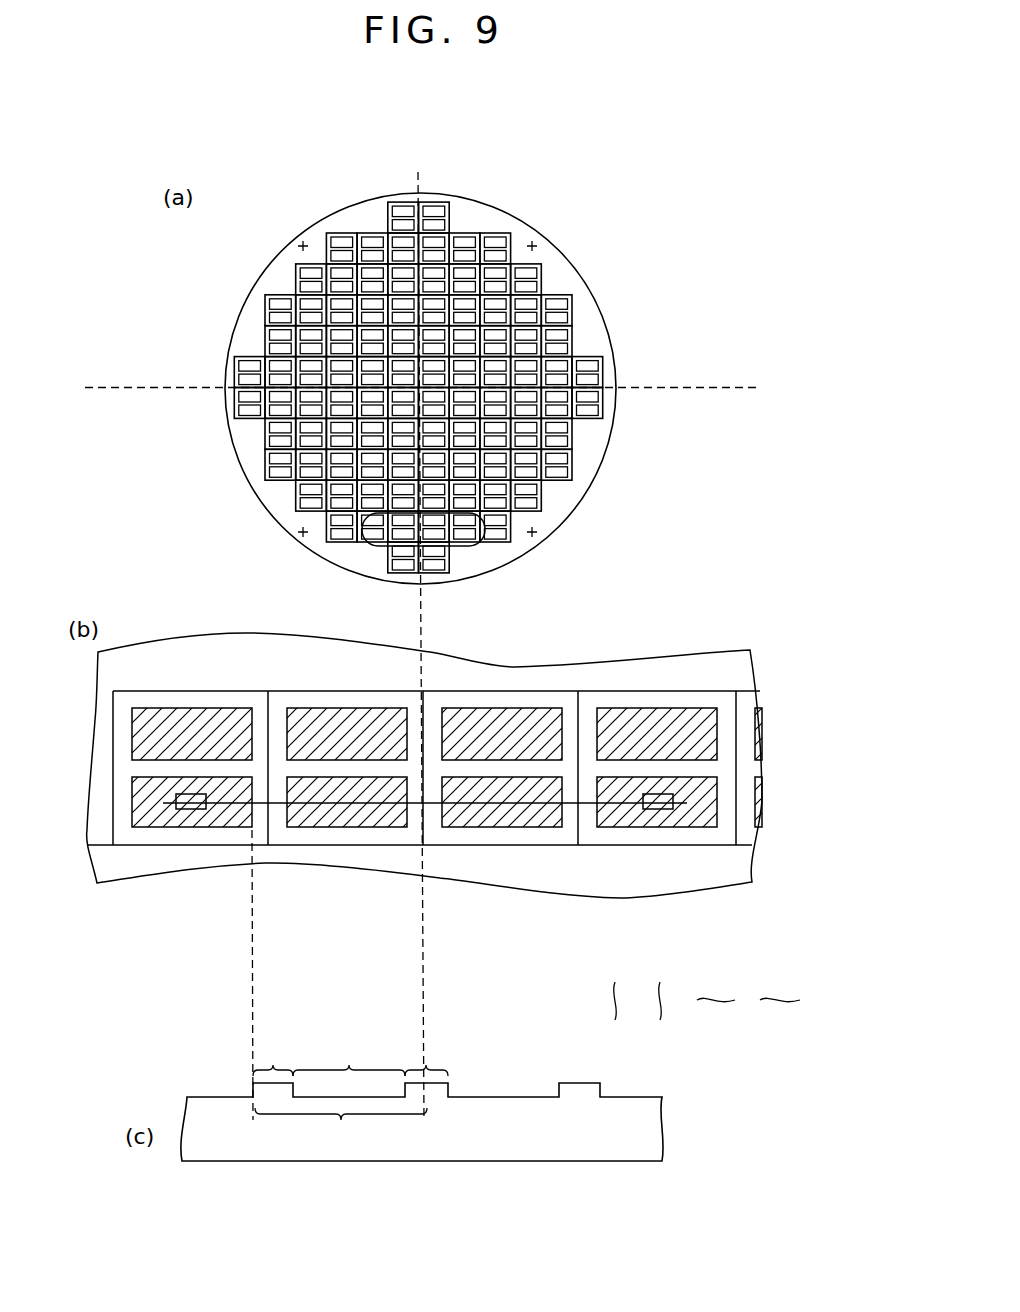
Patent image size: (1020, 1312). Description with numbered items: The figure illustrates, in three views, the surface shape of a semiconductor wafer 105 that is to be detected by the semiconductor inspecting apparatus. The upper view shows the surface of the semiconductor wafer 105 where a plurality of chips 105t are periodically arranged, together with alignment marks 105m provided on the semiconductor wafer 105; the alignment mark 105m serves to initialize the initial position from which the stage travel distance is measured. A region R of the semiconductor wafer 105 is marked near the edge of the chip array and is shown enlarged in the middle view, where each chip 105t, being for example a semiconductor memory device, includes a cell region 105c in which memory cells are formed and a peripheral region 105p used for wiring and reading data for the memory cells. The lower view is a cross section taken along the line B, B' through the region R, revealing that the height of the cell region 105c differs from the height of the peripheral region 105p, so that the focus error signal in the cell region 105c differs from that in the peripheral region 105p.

The semiconductor wafer 105 is at (608, 437).
The chip 105t is at (560, 292).
The cell region 105c is at (363, 743).
The peripheral region 105p is at (293, 835).
The alignment mark 105m is at (303, 247).
The region R is at (455, 548).
The line B-B' (start point) B is at (425, 877).
The line B-B' (end point) B' is at (658, 877).